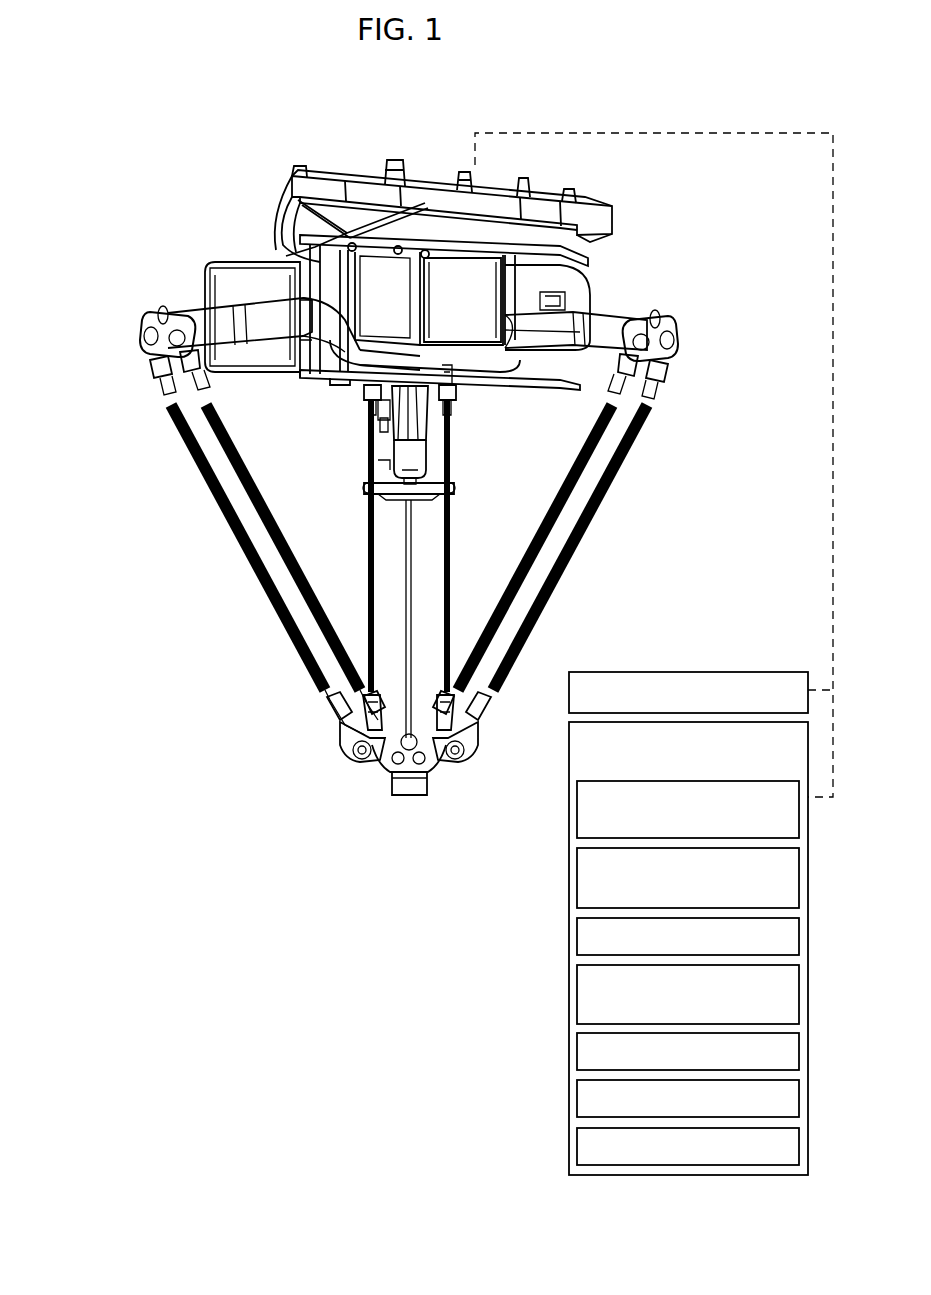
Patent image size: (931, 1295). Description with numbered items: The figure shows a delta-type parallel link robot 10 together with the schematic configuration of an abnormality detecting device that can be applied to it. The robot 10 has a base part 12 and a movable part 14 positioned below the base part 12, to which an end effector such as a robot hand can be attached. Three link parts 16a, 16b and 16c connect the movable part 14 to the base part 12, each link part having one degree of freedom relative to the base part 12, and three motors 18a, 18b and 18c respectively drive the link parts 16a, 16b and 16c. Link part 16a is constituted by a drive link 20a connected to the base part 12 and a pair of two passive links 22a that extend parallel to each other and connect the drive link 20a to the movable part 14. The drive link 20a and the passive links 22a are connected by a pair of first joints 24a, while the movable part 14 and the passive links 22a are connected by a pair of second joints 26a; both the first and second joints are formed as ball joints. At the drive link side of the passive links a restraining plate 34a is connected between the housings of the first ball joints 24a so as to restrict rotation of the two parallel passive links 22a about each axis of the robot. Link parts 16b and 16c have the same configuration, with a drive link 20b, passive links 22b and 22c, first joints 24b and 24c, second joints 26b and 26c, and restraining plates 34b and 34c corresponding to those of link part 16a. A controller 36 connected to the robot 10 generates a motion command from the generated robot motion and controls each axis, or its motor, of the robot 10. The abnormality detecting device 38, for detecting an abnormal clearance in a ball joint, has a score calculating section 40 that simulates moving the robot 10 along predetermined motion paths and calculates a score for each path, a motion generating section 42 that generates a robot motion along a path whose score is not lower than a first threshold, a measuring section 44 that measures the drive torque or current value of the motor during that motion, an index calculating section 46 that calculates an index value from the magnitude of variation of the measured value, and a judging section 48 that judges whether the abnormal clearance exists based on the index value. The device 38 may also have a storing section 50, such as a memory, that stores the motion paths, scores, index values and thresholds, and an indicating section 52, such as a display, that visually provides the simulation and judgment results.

The parallel link robot 10 is at (113, 204).
The base part 12 is at (345, 212).
The movable part 14 is at (410, 790).
The link part 16a is at (150, 459).
The link part 16b is at (625, 512).
The link part 16c is at (470, 520).
The motor 18a is at (470, 295).
The motor 18b is at (583, 306).
The motor 18c is at (255, 290).
The drive link 20a is at (225, 326).
The drive link 20b is at (605, 325).
The passive links 22a is at (312, 603).
The passive links 22b is at (520, 602).
The passive links 22c is at (445, 530).
The first joints 24a is at (145, 336).
The first joints 24b is at (672, 337).
The first joints 24c is at (470, 400).
The second joints 26a is at (355, 745).
The second joints 26b is at (458, 745).
The second joints 26c is at (393, 690).
The restraining plate 34a is at (160, 378).
The restraining plate 34b is at (675, 372).
The restraining plate 34c is at (372, 394).
The controller 36 is at (705, 672).
The abnormality detecting device 38 is at (569, 735).
The score calculating section 40 is at (577, 810).
The motion generating section 42 is at (577, 880).
The measuring section 44 is at (577, 936).
The index calculating section 46 is at (577, 996).
The judging section 48 is at (577, 1051).
The storing section 50 is at (577, 1098).
The indicating section 52 is at (577, 1146).